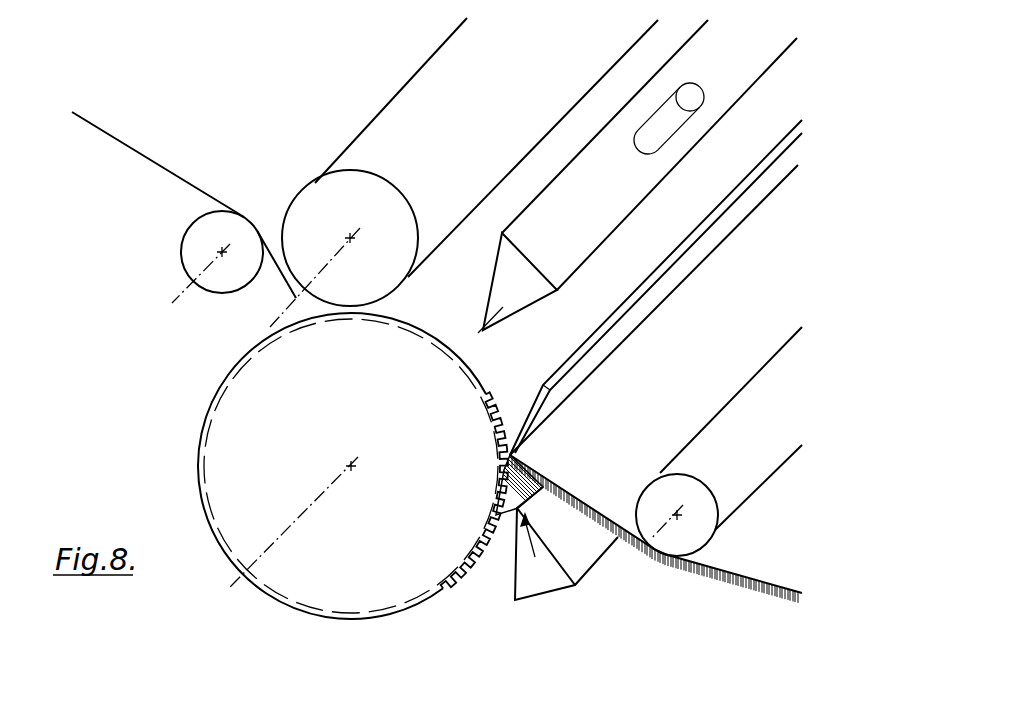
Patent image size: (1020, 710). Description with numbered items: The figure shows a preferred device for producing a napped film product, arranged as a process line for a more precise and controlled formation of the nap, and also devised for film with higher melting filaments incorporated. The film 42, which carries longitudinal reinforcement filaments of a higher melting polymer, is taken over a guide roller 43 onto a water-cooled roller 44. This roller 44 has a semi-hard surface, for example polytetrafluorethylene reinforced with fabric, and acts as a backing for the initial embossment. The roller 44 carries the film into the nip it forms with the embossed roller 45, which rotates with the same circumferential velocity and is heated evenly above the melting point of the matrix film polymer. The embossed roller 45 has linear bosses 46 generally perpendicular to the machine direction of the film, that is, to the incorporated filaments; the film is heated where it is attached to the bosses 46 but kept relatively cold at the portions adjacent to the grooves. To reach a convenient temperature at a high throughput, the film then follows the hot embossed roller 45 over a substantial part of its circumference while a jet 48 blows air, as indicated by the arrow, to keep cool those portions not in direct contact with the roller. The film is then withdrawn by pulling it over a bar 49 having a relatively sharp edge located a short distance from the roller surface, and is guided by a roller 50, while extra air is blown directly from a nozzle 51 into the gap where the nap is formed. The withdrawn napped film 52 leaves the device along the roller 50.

The film 42 is at (137, 152).
The guide roller 43 is at (187, 247).
The water-cooled roller 44 is at (385, 185).
The embossed roller 45 is at (213, 442).
The linear bosses 46 is at (463, 577).
The jet 48 is at (518, 302).
The bar 49 is at (593, 367).
The roller 50 is at (700, 537).
The nozzle 51 is at (538, 587).
The fibrous web 52 is at (698, 577).